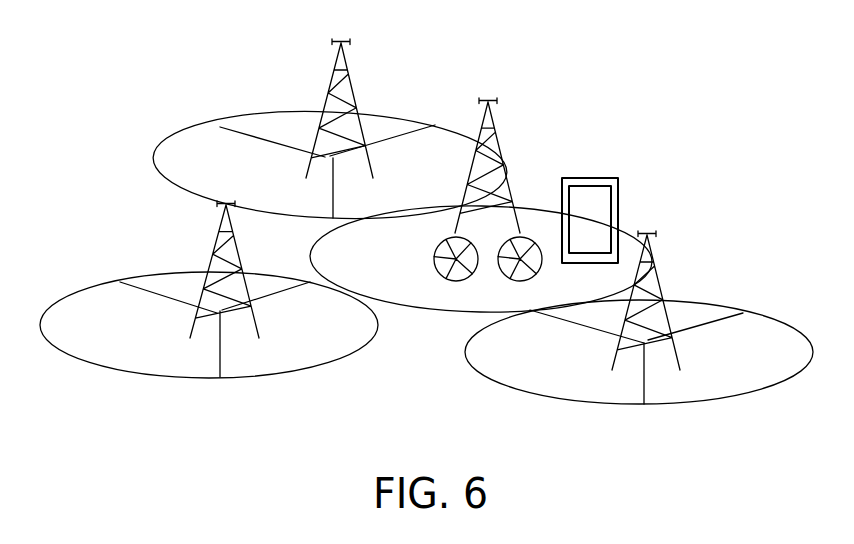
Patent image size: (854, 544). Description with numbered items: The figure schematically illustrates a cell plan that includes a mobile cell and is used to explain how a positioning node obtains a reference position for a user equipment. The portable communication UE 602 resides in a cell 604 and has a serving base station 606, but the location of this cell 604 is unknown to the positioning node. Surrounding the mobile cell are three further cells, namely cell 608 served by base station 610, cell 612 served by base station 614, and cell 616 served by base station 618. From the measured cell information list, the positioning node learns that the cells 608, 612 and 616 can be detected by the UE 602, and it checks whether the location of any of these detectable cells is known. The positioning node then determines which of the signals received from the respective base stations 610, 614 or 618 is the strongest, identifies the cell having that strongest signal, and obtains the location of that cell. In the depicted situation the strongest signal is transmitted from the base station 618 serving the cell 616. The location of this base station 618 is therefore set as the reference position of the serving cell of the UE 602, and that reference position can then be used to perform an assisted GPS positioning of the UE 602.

The portable communication UE 602 is at (618, 190).
The cell 604 is at (414, 273).
The serving base station 606 is at (503, 143).
The cell 608 is at (437, 147).
The base station 610 is at (330, 93).
The cell 612 is at (293, 356).
The base station 614 is at (205, 262).
The cell 616 is at (692, 313).
The base station 618 is at (660, 278).